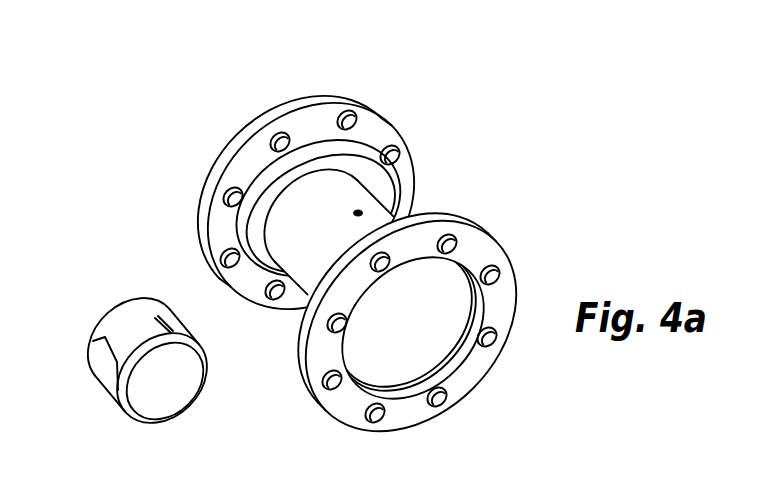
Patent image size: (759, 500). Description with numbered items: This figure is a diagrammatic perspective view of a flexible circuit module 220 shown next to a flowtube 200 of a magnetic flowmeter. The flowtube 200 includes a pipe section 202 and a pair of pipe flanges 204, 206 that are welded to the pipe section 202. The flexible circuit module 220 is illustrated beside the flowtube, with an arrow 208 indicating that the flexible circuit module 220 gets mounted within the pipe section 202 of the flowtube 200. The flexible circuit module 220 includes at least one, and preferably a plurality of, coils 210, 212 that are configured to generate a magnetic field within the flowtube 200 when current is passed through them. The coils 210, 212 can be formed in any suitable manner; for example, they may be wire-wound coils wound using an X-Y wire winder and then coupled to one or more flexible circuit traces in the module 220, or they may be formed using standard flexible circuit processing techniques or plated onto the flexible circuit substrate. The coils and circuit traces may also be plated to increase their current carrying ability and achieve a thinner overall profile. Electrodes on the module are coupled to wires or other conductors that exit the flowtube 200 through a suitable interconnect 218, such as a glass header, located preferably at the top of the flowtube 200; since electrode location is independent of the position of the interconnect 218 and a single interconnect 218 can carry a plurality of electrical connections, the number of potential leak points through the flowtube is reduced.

The flowtube 200 is at (316, 244).
The pipe section 202 is at (371, 203).
The pipe flange 204 is at (311, 196).
The pipe flange 206 is at (495, 364).
The arrow 208 is at (262, 266).
The coil 210 is at (147, 371).
The coil 212 is at (92, 344).
The interconnect 218 is at (372, 195).
The flexible circuit module 220 is at (132, 418).